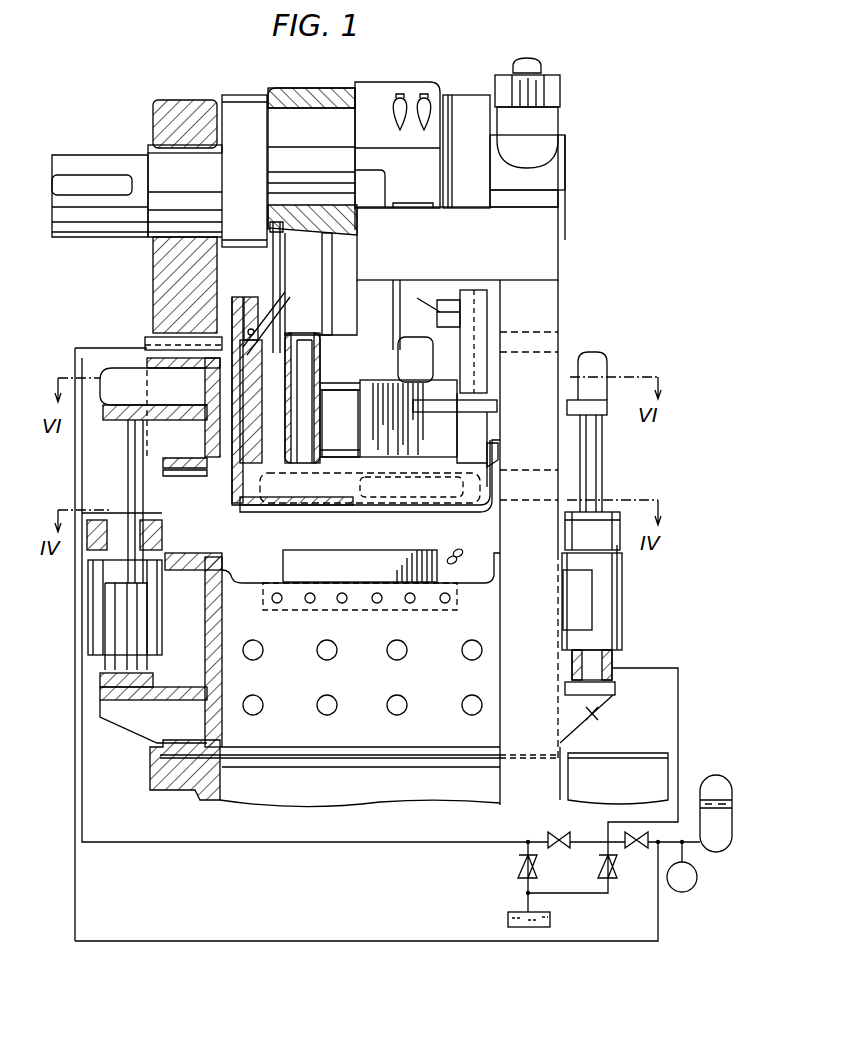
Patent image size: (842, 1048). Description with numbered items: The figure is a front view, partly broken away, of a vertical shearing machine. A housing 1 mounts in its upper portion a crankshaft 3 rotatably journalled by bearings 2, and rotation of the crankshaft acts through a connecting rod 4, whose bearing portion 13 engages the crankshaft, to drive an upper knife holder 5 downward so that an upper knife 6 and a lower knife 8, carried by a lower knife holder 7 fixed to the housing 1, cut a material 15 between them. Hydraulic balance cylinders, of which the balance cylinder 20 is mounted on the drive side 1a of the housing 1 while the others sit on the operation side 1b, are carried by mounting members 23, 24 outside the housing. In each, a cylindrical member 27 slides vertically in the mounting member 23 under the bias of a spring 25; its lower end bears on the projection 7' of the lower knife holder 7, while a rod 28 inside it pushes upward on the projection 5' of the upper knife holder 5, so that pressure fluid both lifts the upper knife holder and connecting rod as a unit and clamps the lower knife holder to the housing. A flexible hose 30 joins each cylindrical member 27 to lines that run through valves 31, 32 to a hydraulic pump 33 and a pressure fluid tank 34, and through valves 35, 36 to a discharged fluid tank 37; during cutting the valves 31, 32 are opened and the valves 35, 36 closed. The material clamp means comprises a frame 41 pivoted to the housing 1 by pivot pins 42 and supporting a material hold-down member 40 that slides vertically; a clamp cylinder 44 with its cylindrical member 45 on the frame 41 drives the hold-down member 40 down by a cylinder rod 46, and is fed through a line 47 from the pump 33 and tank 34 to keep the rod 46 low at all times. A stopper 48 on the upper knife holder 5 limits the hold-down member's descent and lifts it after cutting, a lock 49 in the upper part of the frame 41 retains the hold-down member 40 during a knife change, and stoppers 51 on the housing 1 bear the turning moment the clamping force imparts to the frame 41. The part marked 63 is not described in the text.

The housing 1 is at (572, 232).
The drive side of the housing 1a is at (162, 272).
The operation side of the housing 1b is at (556, 290).
The bearing 2 is at (168, 145).
The crankshaft 3 is at (246, 95).
The connecting rod 4 is at (402, 86).
The upper knife holder 5 is at (185, 482).
The projection of the upper knife holder 5' is at (365, 390).
The upper knife 6 is at (420, 512).
The lower knife holder 7 is at (359, 677).
The projection of the lower knife holder 7' is at (361, 743).
The lower knife 8 is at (446, 582).
The bearing portion of the connecting rod 13 is at (319, 100).
The material 15 is at (337, 558).
The hydraulic balance cylinder 20 is at (152, 668).
The mounting member 23 is at (90, 636).
The mounting member 24 is at (590, 610).
The spring 25 is at (90, 555).
The cylindrical member 27 is at (155, 530).
The rod 28 is at (117, 480).
The flexible hose 30 is at (84, 792).
The valve 31 is at (546, 838).
The valve 32 is at (636, 850).
The hydraulic pump 33 is at (680, 887).
The pressure fluid tank 34 is at (712, 852).
The valve 35 is at (599, 868).
The valve 36 is at (160, 360).
The discharged fluid tank 37 is at (508, 915).
The material hold-down member 40 is at (253, 505).
The frame 41 is at (385, 380).
The pivot pin 42 is at (462, 300).
The clamp cylinder 44 is at (303, 340).
The cylindrical member of the clamp cylinder 45 is at (322, 376).
The cylinder rod 46 is at (320, 414).
The line 47 is at (77, 888).
The stopper 48 is at (210, 455).
The lock 49 is at (265, 308).
The stopper 51 is at (497, 380).
The base block 63 is at (646, 753).